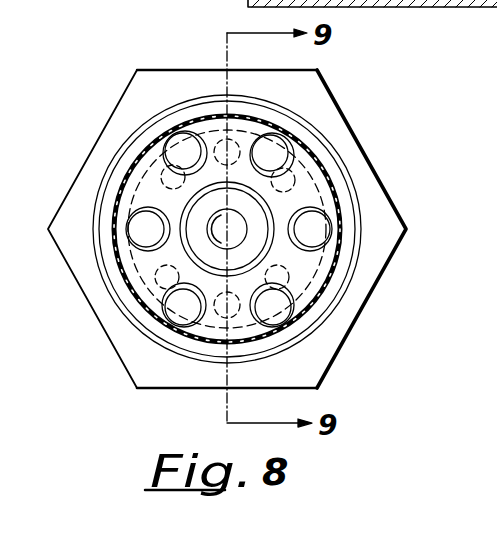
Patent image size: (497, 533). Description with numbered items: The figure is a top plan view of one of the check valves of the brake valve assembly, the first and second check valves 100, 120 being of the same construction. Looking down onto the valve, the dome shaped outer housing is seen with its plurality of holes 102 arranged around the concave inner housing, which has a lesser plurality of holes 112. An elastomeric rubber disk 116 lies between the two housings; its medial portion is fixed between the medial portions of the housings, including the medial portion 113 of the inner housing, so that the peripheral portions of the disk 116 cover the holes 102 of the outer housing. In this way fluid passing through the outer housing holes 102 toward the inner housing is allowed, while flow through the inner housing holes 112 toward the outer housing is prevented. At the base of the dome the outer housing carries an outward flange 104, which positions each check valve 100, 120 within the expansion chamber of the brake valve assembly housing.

The first check valve 100 is at (295, 12).
The second check valve 120 is at (185, 53).
The holes 102 is at (133, 143).
The outward flange 104 is at (308, 95).
The holes 112 is at (182, 118).
The medial portion 113 is at (257, 243).
The elastomeric rubber disk 116 is at (332, 190).